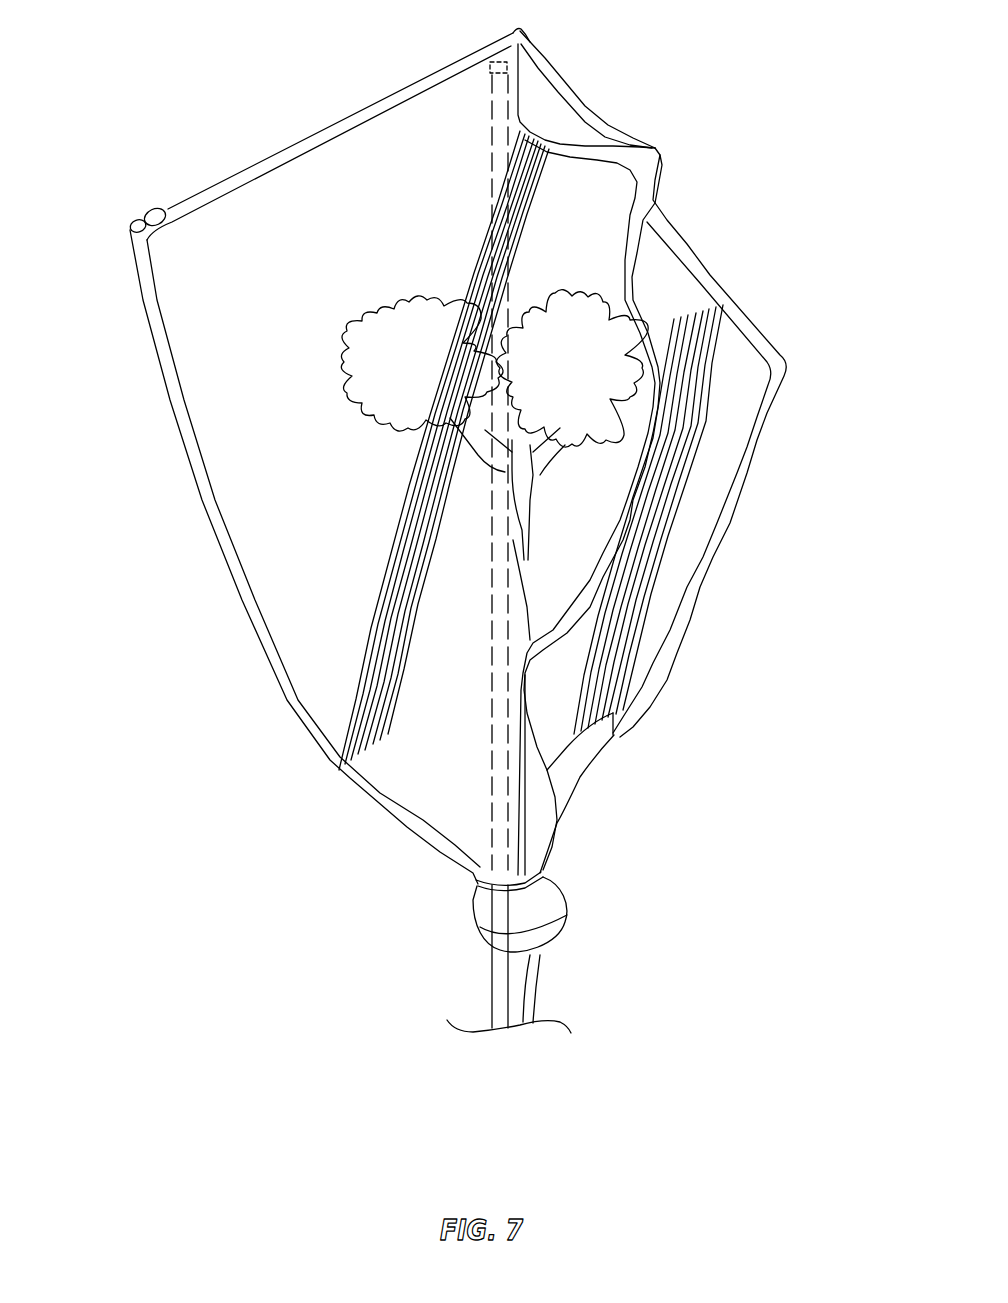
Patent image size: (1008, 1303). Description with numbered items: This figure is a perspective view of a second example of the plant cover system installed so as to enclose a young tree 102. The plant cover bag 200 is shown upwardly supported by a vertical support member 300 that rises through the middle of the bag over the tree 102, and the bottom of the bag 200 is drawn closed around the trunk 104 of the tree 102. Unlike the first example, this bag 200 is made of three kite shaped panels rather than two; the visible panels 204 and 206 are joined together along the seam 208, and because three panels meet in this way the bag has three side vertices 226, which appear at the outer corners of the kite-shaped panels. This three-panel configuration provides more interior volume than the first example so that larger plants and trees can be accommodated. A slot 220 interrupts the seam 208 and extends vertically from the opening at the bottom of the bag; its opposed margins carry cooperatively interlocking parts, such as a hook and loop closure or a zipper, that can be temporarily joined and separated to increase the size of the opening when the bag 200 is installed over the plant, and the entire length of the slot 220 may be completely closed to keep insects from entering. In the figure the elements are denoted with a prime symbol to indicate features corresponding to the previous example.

The plant cover bag 200 is at (462, 521).
The seam 208 is at (397, 100).
The side vertices 226 is at (127, 223).
The kite shaped panel 204 is at (297, 329).
The kite shaped panel 206 is at (685, 319).
The vertical support member 300 is at (492, 208).
The tree 102 is at (326, 415).
The trunk 104 is at (515, 780).
The slot 220 is at (592, 785).